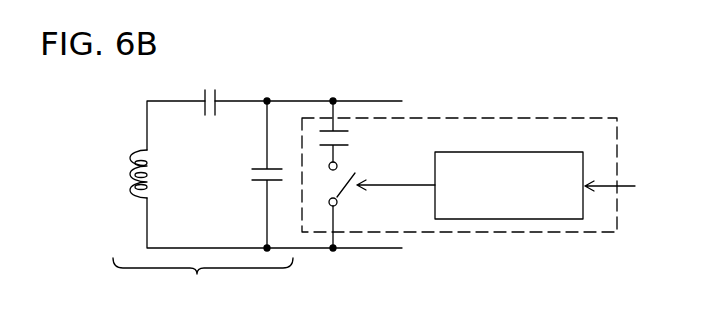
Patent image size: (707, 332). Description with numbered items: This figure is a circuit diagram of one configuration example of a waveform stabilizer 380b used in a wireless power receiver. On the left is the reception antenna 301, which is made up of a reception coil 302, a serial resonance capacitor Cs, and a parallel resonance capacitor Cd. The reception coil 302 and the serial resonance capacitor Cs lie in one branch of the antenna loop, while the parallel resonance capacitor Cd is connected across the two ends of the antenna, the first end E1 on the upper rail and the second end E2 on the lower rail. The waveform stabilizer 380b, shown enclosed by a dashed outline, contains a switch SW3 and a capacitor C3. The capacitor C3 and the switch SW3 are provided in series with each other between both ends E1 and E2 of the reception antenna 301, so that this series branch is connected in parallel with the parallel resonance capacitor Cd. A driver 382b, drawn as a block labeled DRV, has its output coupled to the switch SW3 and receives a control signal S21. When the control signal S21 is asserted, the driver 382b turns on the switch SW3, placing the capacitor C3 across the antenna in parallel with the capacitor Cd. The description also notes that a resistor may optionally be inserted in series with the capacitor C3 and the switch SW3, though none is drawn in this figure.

The reception antenna 301 is at (203, 283).
The reception coil 302 is at (132, 180).
The serial resonance capacitor Cs is at (206, 88).
The parallel resonance capacitor Cd is at (262, 188).
The first end of the reception antenna E1 is at (320, 101).
The second end of the reception antenna E2 is at (313, 249).
The waveform stabilizer 380b is at (597, 118).
The driver 382b is at (540, 152).
The capacitor C3 is at (348, 138).
The switch SW3 is at (344, 197).
The control signal S21 is at (631, 188).